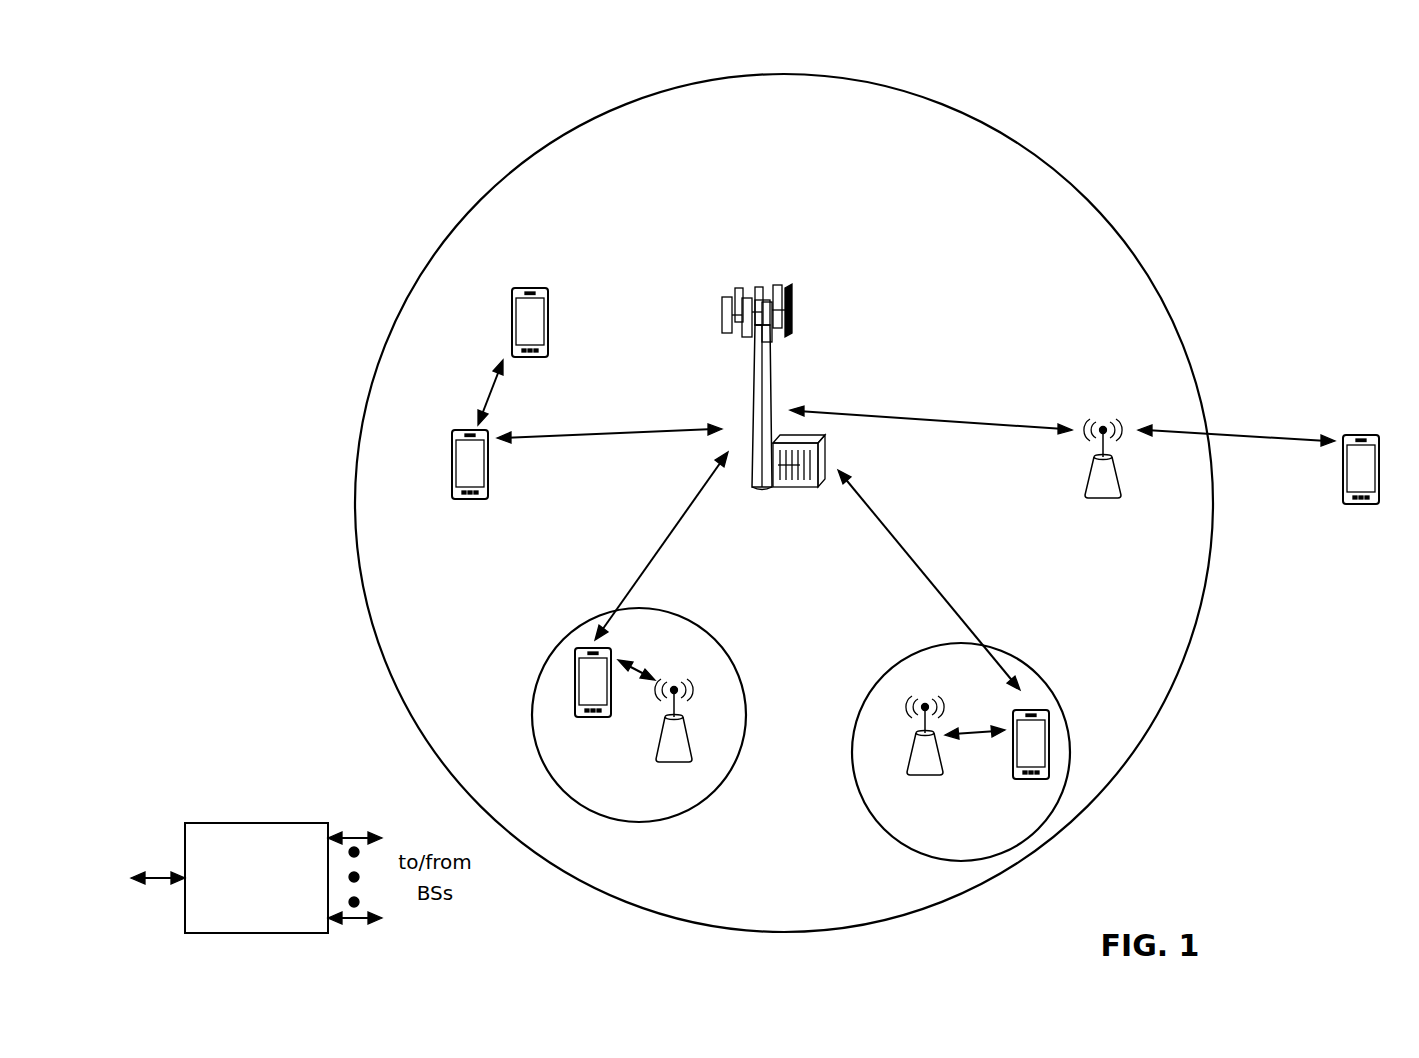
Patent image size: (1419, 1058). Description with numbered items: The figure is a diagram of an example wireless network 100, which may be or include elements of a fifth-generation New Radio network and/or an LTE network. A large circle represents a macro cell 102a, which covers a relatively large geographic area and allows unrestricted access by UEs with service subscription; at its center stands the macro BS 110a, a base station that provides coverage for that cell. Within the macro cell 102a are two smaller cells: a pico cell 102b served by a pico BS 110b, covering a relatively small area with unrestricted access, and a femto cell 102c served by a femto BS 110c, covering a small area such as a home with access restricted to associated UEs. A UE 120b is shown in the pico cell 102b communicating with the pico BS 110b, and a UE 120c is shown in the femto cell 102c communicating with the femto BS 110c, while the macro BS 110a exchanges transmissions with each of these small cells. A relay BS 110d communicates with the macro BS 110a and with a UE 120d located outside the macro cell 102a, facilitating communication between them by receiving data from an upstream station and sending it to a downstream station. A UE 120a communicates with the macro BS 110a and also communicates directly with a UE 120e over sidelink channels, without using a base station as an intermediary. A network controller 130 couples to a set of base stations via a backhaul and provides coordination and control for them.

The wireless network 100 is at (233, 63).
The macro cell 102a is at (1066, 177).
The pico cell 102b is at (732, 661).
The femto cell 102c is at (892, 667).
The macro BS 110a is at (771, 275).
The pico BS 110b is at (696, 752).
The femto BS 110c is at (908, 766).
The relay BS 110d is at (1104, 421).
The UE 120a is at (452, 468).
The UE 120b is at (585, 717).
The UE 120c is at (1020, 779).
The UE 120d is at (1373, 435).
The UE 120e is at (511, 308).
The network controller 130 is at (257, 822).